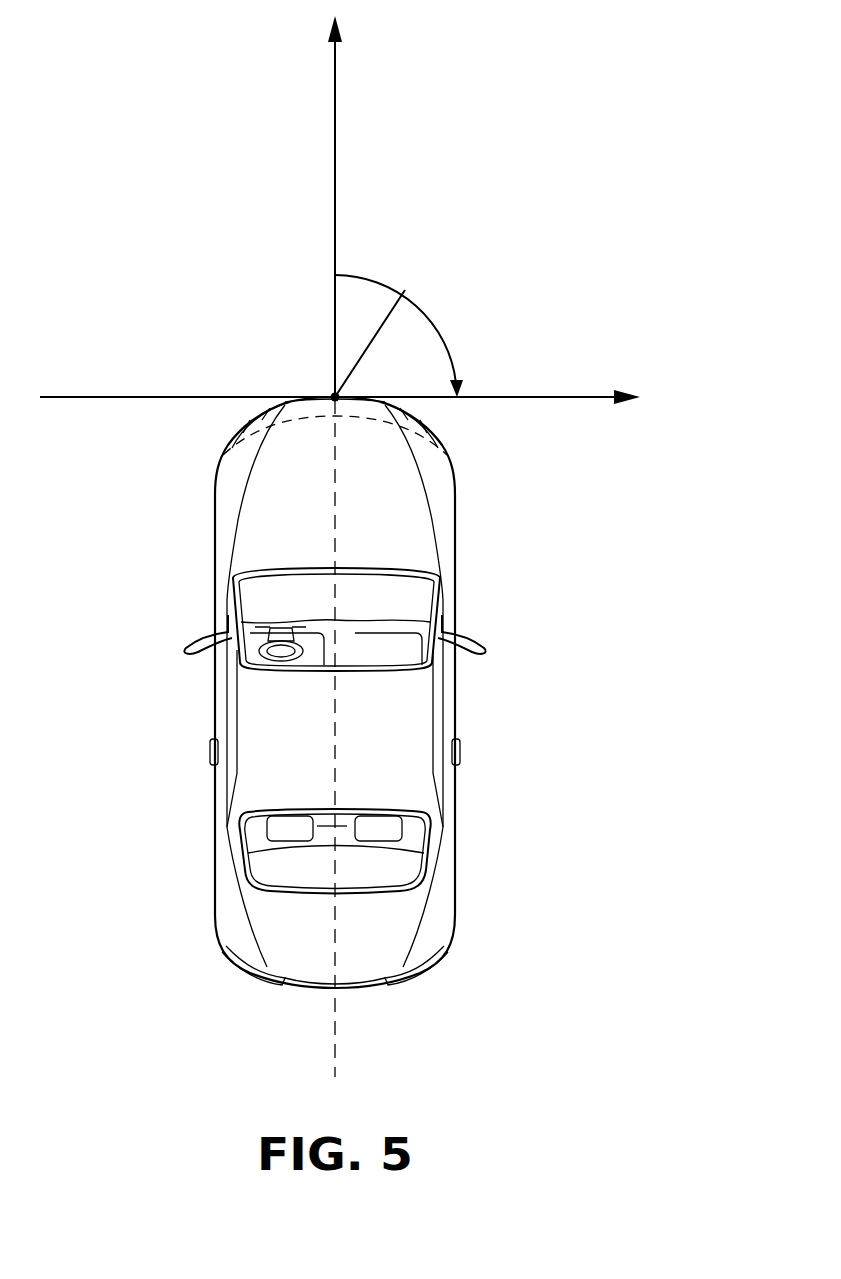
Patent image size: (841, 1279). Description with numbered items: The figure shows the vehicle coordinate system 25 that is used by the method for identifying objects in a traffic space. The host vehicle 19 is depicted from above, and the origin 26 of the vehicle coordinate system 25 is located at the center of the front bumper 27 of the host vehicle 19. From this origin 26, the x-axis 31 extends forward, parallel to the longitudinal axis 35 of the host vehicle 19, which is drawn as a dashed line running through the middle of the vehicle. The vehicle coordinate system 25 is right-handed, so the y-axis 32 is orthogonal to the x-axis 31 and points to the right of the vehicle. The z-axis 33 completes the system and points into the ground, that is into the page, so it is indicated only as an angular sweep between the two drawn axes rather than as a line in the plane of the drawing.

The host vehicle 19 is at (447, 903).
The vehicle coordinate system 25 is at (475, 200).
The origin 26 is at (326, 388).
The front bumper 27 is at (288, 402).
The x-axis 31 is at (335, 150).
The y-axis 32 is at (568, 400).
The z-axis 33 is at (405, 290).
The longitudinal axis 35 is at (337, 739).